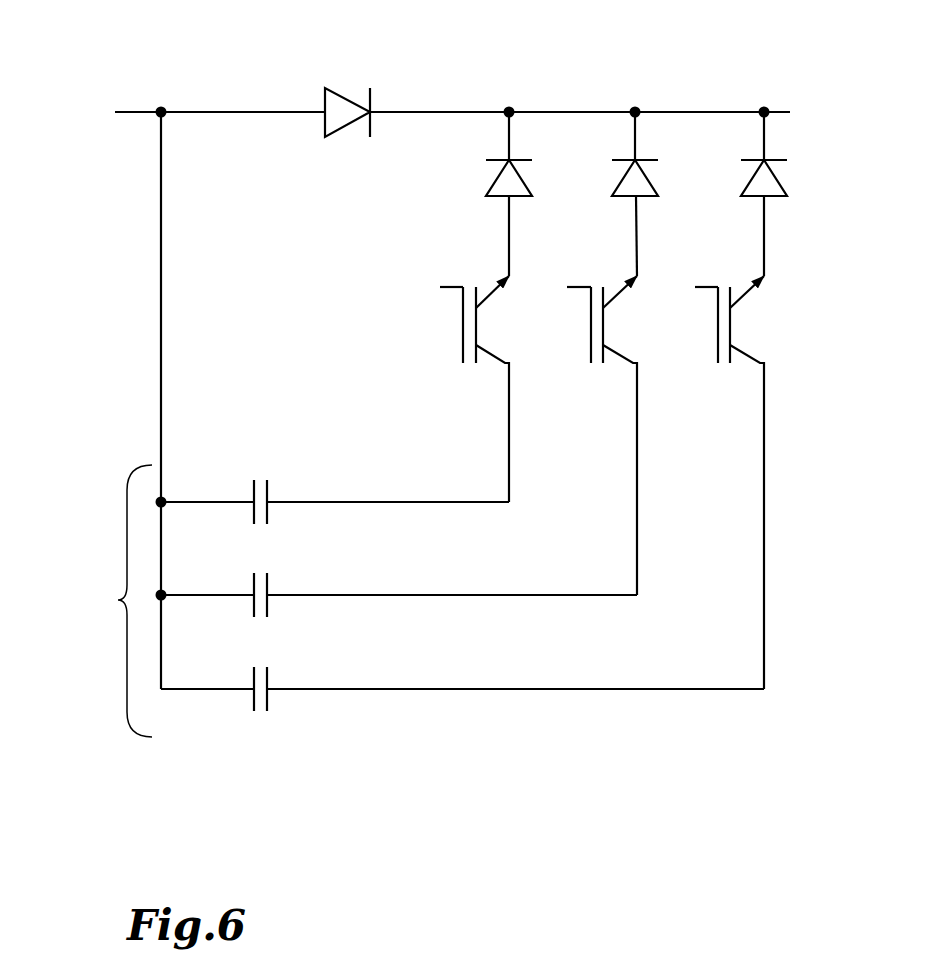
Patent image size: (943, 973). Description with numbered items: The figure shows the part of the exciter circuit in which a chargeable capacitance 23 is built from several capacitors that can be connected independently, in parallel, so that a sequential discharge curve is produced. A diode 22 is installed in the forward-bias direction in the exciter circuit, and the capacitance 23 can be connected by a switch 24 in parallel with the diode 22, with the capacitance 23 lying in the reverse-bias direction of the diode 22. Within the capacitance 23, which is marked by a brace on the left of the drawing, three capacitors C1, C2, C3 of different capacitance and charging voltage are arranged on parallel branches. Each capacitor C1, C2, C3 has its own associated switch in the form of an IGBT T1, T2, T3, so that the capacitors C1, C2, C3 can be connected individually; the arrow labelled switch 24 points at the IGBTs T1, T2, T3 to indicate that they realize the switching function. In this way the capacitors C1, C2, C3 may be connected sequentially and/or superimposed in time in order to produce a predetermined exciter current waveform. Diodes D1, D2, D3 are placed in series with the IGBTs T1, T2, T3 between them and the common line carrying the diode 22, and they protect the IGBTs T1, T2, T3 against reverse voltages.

The diode 22 is at (347, 100).
The chargeable capacitance 23 is at (116, 600).
The switch 24 is at (413, 323).
The diode D1 is at (490, 192).
The diode D2 is at (616, 193).
The diode D3 is at (745, 192).
The IGBT T1 is at (462, 345).
The IGBT T2 is at (590, 358).
The IGBT T3 is at (717, 352).
The capacitor C1 is at (268, 518).
The capacitor C2 is at (265, 610).
The capacitor C3 is at (267, 703).